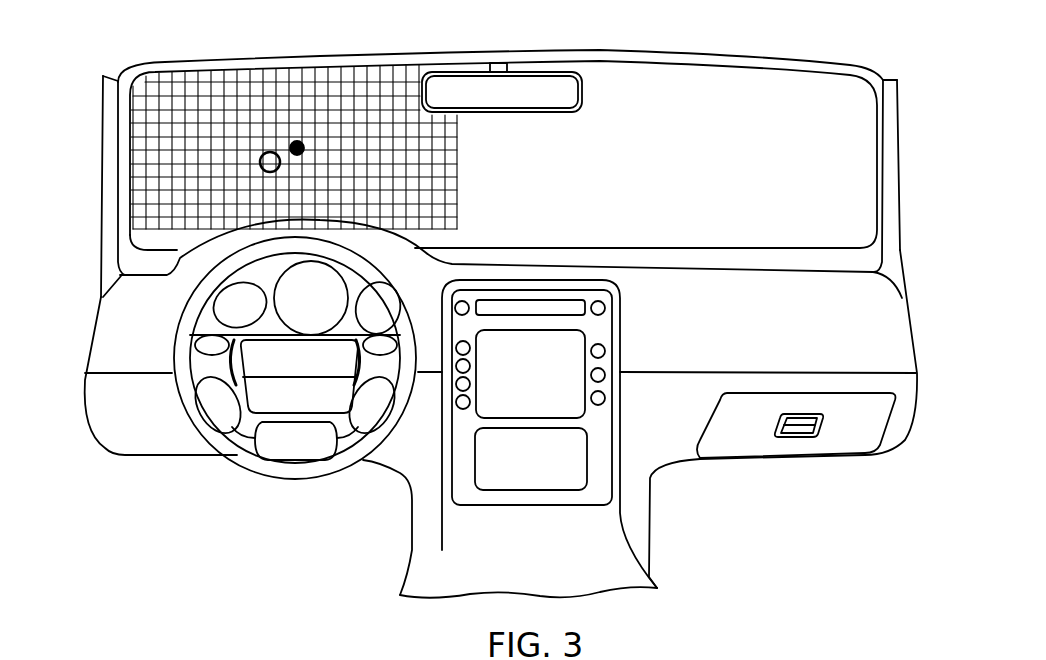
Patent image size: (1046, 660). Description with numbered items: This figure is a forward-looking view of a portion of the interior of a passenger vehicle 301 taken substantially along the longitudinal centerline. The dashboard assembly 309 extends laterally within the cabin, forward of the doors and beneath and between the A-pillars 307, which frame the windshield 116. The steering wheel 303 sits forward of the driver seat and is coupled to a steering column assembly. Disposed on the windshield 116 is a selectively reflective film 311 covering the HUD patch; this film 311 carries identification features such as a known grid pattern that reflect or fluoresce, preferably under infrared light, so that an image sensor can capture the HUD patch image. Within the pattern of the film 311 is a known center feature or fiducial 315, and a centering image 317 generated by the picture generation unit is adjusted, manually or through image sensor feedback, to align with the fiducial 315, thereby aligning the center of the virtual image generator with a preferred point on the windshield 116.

The passenger vehicle 301 is at (633, 26).
The steering wheel 303 is at (330, 478).
The A-pillars 307 is at (103, 193).
The dashboard assembly 309 is at (706, 324).
The selectively reflective film 311 is at (463, 147).
The center feature or fiducial 315 is at (298, 141).
The centering image 317 is at (270, 151).
The windshield 116 is at (701, 170).